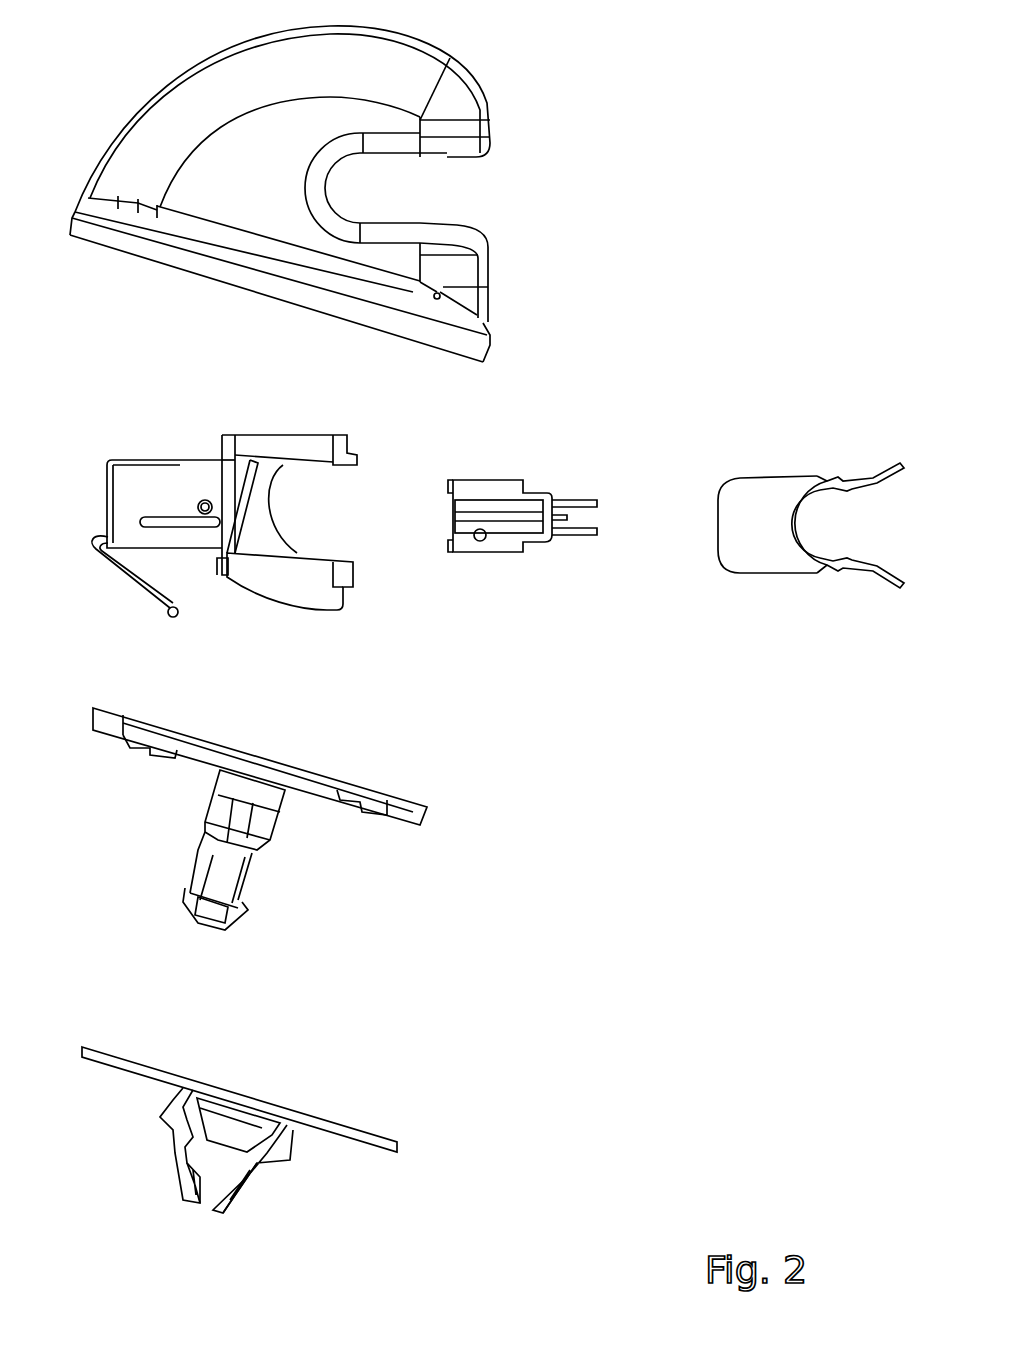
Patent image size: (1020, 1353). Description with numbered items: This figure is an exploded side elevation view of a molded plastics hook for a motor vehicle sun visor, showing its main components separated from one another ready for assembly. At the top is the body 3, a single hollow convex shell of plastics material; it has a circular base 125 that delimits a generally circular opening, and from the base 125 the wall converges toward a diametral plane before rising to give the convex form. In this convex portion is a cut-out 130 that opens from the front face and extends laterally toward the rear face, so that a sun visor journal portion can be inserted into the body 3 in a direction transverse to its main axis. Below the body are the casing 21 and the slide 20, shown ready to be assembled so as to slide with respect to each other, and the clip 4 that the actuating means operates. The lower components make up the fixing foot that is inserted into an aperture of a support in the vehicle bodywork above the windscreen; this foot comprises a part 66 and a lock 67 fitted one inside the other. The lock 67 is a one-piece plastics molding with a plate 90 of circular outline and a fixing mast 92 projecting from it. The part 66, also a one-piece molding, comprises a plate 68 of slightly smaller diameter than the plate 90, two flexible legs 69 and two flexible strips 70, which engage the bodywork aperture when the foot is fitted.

The body 3 is at (515, 70).
The cut-out 130 is at (447, 160).
The base 125 is at (142, 247).
The casing 21 is at (276, 421).
The slide 20 is at (547, 556).
The clip 4 is at (798, 458).
The lock 67 is at (289, 814).
The plate 90 is at (283, 772).
The fixing mast 92 is at (258, 883).
The part 66 is at (303, 1118).
The plate 68 is at (260, 1113).
The flexible legs 69 is at (170, 1127).
The flexible strips 70 is at (217, 1113).